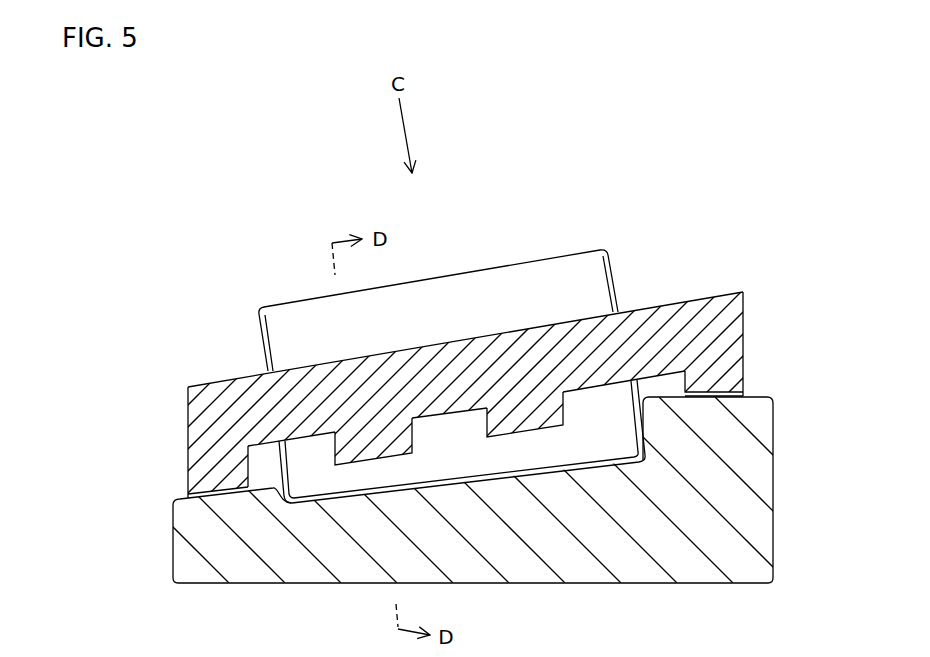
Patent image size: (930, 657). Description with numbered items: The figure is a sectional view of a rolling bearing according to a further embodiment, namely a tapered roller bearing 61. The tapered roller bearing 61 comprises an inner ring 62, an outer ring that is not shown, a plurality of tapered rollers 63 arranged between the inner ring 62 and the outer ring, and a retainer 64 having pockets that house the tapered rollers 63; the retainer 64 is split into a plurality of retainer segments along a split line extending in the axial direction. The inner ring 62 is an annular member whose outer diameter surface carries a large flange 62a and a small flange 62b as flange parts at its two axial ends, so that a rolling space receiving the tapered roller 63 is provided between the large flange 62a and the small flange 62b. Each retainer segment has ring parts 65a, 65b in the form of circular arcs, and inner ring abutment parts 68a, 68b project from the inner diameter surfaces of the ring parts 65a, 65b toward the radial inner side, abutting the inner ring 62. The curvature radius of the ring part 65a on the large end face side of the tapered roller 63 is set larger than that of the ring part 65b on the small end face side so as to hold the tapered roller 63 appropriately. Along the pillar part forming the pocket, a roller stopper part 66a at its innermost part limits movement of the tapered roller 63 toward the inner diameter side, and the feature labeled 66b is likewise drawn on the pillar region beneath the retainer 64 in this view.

The tapered roller bearing 61 is at (168, 248).
The inner ring 62 is at (525, 557).
The large flange 62a is at (697, 412).
The small flange 62b is at (223, 503).
The tapered roller 63 is at (500, 292).
The retainer 64 is at (665, 303).
The ring part 65a is at (733, 339).
The ring part 65b is at (205, 443).
The roller stopper part 66a is at (372, 440).
The base portion between protrusions 66b is at (593, 337).
The inner ring abutment part 68a is at (733, 377).
The inner ring abutment part 68b is at (205, 477).